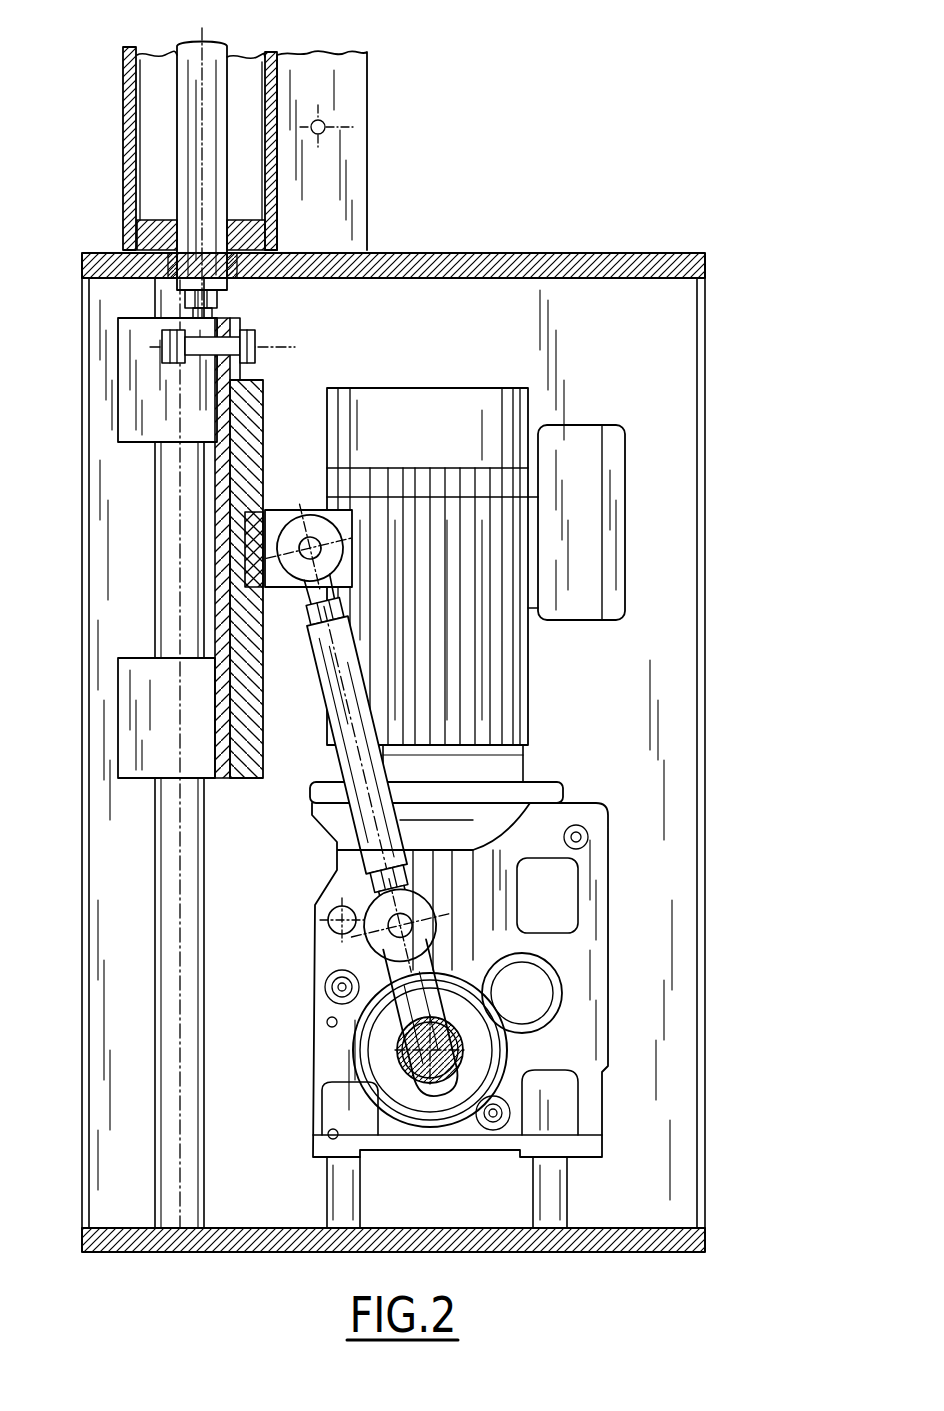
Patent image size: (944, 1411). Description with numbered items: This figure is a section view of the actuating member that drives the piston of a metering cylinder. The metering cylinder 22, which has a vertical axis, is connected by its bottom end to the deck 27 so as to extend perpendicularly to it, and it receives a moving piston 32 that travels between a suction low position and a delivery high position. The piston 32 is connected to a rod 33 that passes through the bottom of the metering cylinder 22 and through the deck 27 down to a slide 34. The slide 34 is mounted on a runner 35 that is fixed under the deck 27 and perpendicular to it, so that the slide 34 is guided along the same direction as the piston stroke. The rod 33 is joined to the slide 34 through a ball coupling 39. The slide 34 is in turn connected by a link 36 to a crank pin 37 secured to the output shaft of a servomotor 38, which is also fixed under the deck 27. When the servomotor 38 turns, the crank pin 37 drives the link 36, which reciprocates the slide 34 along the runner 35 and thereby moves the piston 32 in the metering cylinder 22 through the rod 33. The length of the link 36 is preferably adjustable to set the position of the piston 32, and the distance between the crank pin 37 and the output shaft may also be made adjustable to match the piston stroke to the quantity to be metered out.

The metering cylinder 22 is at (128, 120).
The deck 27 is at (450, 257).
The piston 32 is at (343, 87).
The rod 33 is at (210, 77).
The slide 34 is at (250, 417).
The runner 35 is at (170, 838).
The link 36 is at (372, 742).
The crank pin 37 is at (413, 970).
The servomotor 38 is at (510, 682).
The ball coupling 39 is at (217, 372).